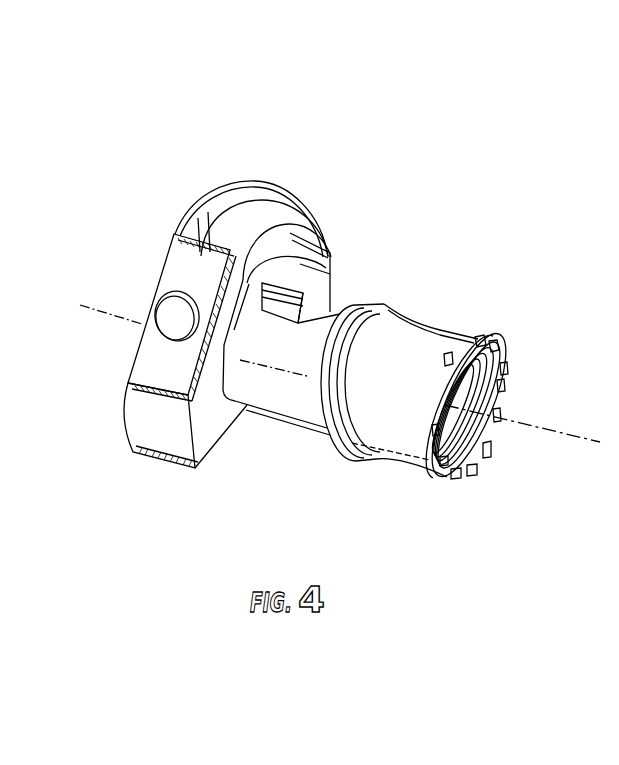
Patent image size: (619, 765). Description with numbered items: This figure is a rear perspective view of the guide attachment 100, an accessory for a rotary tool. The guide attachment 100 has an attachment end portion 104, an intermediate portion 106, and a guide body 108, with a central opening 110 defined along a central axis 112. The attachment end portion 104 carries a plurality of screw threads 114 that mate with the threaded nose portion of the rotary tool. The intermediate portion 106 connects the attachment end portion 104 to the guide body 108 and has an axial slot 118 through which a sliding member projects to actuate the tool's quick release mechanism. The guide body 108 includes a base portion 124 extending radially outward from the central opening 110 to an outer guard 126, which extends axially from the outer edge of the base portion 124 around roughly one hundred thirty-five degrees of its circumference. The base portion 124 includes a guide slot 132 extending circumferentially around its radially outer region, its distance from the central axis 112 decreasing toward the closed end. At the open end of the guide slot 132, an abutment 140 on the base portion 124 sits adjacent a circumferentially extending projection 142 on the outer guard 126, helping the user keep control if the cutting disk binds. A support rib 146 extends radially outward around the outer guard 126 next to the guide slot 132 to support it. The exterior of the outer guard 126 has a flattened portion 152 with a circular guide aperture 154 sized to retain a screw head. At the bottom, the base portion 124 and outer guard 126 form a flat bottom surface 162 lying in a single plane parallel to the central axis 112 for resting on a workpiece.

The guide attachment 100 is at (317, 313).
The attachment end portion 104 is at (509, 381).
The intermediate portion 106 is at (402, 265).
The guide body 108 is at (253, 321).
The central opening 110 is at (499, 426).
The central axis 112 is at (553, 428).
The screw threads 114 is at (470, 461).
The axial slot 118 is at (330, 262).
The base portion 124 is at (247, 405).
The outer guard 126 is at (141, 431).
The guide slot 132 is at (267, 249).
The abutment 140 is at (312, 266).
The circumferentially extending projection 142 is at (304, 305).
The support rib 146 is at (228, 215).
The flattened portion 152 is at (157, 367).
The guide aperture 154 is at (168, 316).
The flat bottom surface 162 is at (179, 467).